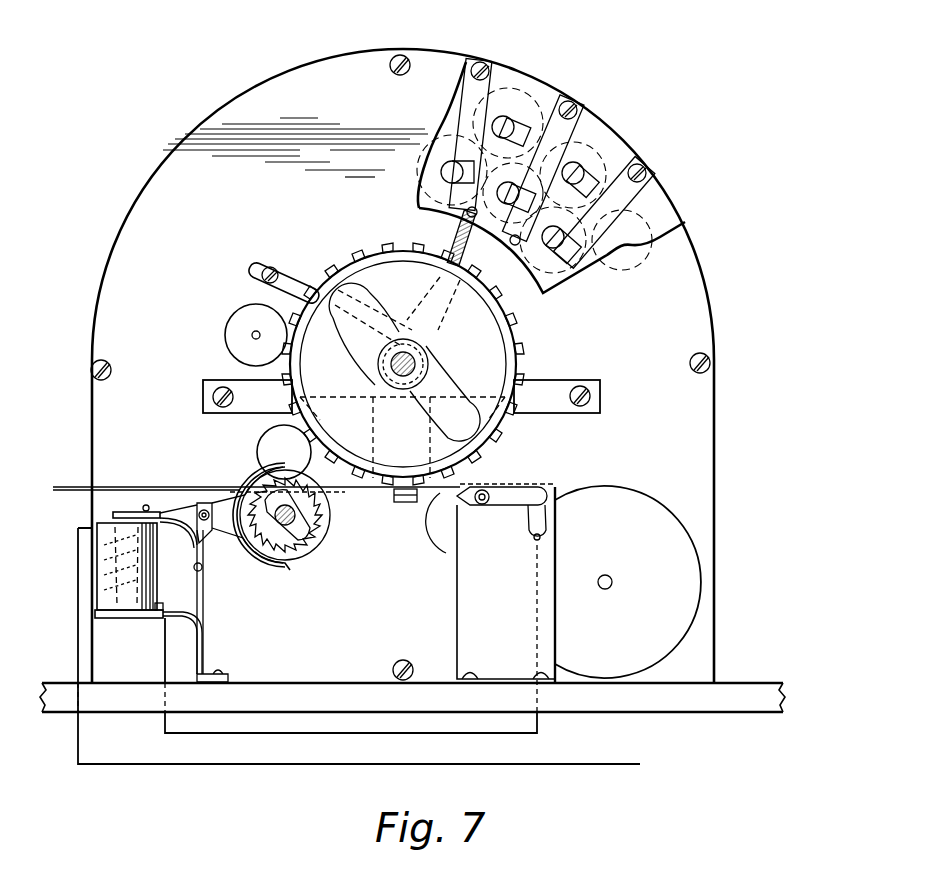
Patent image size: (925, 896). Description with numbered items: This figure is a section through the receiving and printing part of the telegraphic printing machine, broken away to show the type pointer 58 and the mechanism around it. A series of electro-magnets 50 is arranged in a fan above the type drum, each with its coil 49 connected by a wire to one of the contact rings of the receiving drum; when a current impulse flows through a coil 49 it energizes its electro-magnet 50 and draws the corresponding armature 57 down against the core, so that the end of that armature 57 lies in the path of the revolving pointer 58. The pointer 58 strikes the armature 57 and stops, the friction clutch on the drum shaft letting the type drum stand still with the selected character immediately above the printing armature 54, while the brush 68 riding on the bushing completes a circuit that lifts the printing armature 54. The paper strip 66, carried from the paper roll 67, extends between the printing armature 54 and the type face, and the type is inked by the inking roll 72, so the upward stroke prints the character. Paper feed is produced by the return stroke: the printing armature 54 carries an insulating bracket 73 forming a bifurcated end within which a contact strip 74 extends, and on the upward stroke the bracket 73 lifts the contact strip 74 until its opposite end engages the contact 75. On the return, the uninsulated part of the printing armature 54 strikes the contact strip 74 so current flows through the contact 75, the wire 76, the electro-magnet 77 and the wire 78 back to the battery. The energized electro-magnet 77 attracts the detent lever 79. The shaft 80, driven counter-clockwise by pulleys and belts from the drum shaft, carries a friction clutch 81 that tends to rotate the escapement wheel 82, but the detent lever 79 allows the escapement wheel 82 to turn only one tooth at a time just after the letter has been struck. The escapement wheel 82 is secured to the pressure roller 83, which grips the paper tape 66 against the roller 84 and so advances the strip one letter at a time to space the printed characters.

The coil 49 is at (480, 207).
The electro-magnet 50 is at (500, 130).
The printing armature 54 is at (384, 540).
The armature 57 is at (503, 122).
The pointer 58 is at (464, 233).
The paper strip 66 is at (197, 494).
The paper roll 67 is at (660, 522).
The brush 68 is at (285, 273).
The inking roll 72 is at (225, 336).
The bracket 73 is at (387, 500).
The contact strip 74 is at (424, 500).
The contact 75 is at (540, 522).
The wire 76 is at (325, 732).
The electro-magnet 77 is at (153, 568).
The wire 78 is at (78, 580).
The detent lever 79 is at (122, 512).
The shaft 80 is at (290, 528).
The friction clutch 81 is at (305, 518).
The escapement wheel 82 is at (318, 525).
The pressure roller 83 is at (330, 531).
The roller 84 is at (278, 450).